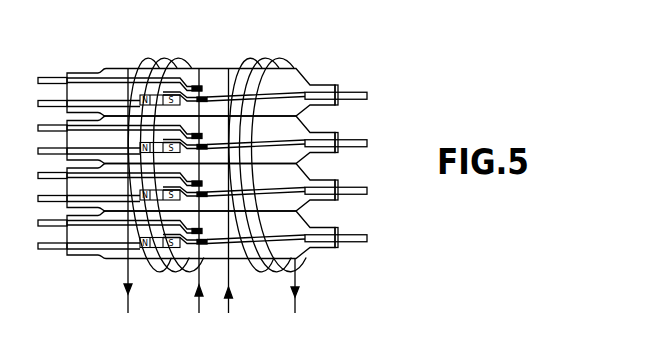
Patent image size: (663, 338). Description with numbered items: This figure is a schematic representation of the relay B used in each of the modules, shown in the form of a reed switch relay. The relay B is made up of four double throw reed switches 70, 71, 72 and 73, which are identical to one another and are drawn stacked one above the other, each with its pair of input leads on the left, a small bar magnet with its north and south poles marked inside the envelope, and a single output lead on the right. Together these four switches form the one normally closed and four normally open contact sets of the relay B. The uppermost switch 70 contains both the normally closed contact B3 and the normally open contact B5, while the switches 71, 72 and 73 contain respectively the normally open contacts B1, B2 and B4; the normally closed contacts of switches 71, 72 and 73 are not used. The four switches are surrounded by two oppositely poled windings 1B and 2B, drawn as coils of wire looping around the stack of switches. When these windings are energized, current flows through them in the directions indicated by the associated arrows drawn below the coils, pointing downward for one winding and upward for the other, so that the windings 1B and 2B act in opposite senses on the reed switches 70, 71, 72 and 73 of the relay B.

The winding 1B is at (158, 60).
The winding 2B is at (275, 62).
The relay B is at (229, 52).
The normally open contact B1 is at (205, 139).
The normally open contact B2 is at (205, 185).
The normally closed contact B3 is at (207, 101).
The normally open contact B4 is at (204, 232).
The normally open contact B5 is at (205, 90).
The double throw reed switch 70 is at (338, 86).
The double throw reed switch 71 is at (338, 134).
The double throw reed switch 72 is at (338, 181).
The double throw reed switch 73 is at (338, 228).